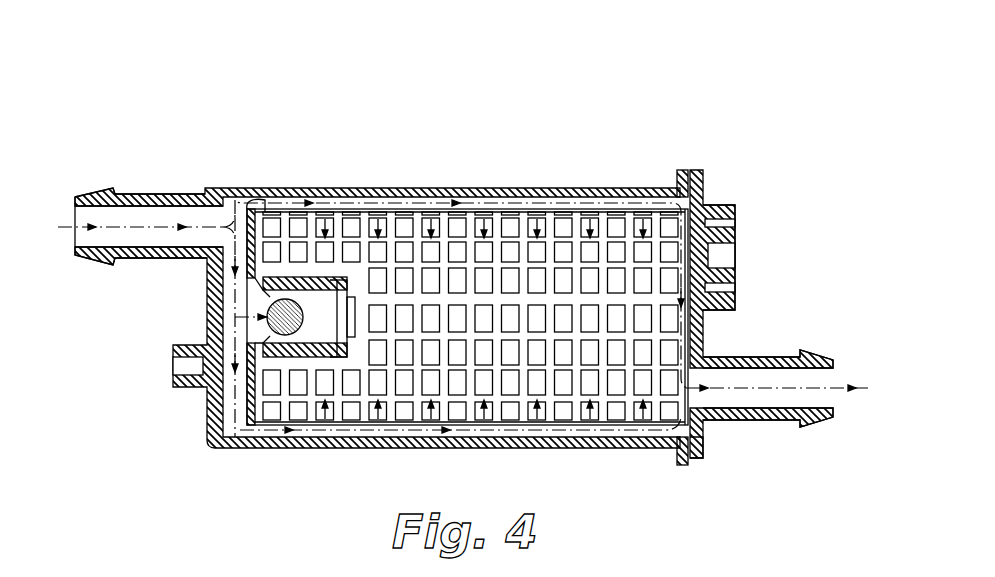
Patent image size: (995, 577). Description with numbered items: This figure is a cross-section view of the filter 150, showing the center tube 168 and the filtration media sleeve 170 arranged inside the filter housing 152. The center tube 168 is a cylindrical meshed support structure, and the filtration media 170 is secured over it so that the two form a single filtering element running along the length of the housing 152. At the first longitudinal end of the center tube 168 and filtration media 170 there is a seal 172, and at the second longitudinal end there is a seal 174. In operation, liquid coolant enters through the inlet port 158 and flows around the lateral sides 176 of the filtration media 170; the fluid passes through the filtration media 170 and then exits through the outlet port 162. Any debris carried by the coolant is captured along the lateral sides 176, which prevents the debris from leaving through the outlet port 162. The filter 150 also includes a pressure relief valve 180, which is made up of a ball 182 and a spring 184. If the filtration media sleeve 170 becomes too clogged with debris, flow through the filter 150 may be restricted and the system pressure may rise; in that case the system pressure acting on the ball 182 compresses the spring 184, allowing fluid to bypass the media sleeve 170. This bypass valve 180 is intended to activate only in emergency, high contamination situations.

The filter 150 is at (410, 138).
The filter housing 152 is at (612, 185).
The inlet port 158 is at (145, 189).
The outlet port 162 is at (745, 357).
The center tube 168 is at (603, 383).
The filtration media sleeve 170 is at (457, 353).
The seal 172 is at (243, 212).
The seal 174 is at (680, 230).
The lateral sides 176 is at (470, 212).
The pressure relief valve 180 is at (268, 284).
The ball 182 is at (282, 317).
The spring 184 is at (339, 315).